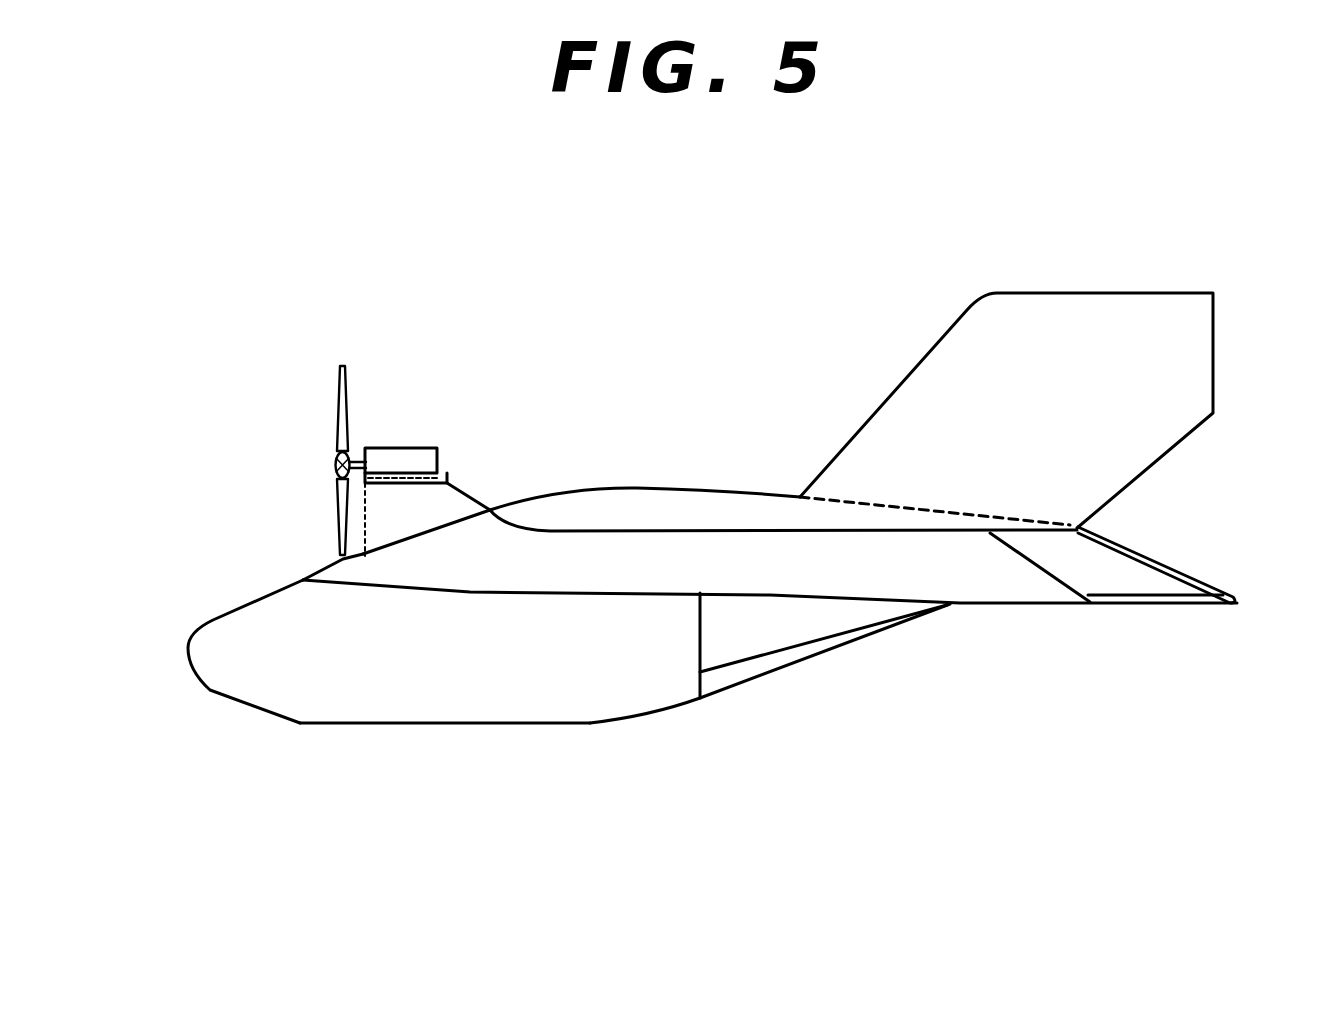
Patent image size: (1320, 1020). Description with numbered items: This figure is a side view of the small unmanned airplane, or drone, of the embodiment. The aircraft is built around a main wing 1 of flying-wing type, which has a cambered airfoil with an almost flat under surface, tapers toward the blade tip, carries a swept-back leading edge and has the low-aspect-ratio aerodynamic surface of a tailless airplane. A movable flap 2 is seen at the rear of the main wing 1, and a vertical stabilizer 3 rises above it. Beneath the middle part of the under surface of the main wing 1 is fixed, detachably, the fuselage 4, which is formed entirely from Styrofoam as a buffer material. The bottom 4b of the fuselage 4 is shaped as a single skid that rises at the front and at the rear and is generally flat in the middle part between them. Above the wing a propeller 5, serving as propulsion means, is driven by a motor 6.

The main wing 1 is at (983, 596).
The movable flap 2 is at (1160, 557).
The vertical stabilizer 3 is at (1213, 357).
The fuselage 4 is at (238, 593).
The bottom 4b is at (438, 724).
The propeller 5 is at (333, 410).
The motor 6 is at (408, 457).